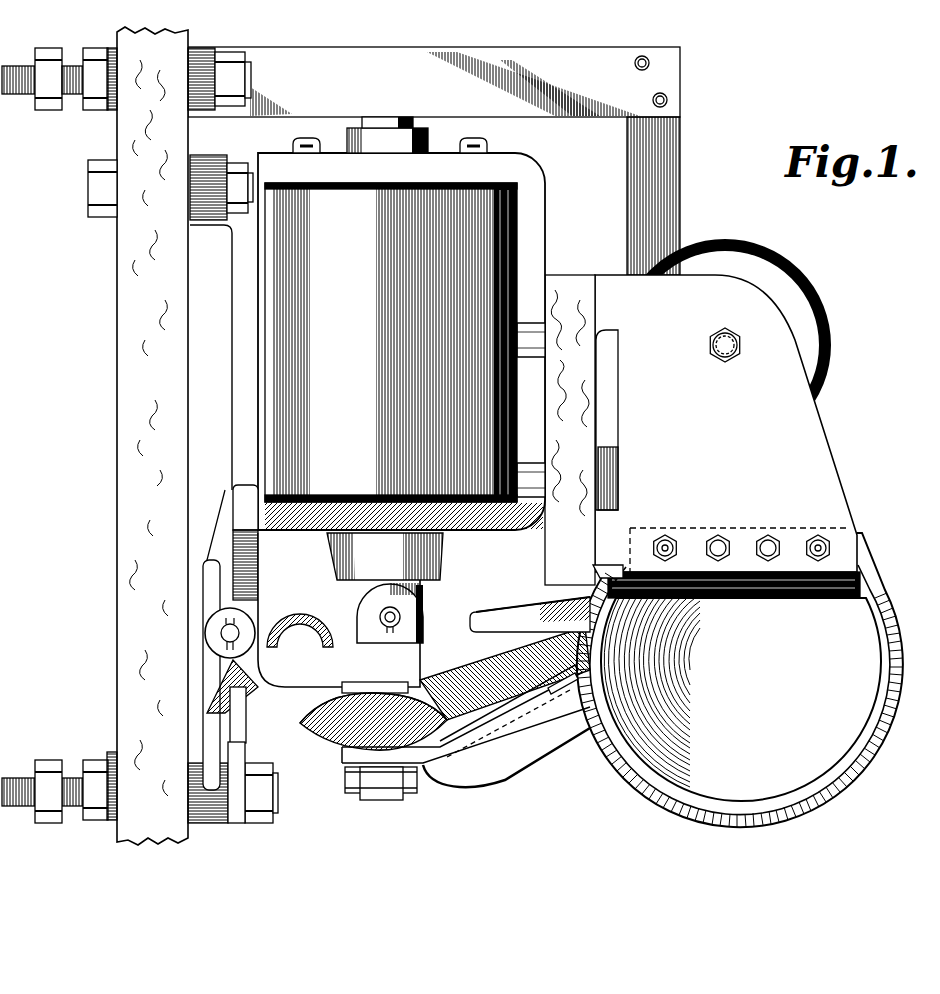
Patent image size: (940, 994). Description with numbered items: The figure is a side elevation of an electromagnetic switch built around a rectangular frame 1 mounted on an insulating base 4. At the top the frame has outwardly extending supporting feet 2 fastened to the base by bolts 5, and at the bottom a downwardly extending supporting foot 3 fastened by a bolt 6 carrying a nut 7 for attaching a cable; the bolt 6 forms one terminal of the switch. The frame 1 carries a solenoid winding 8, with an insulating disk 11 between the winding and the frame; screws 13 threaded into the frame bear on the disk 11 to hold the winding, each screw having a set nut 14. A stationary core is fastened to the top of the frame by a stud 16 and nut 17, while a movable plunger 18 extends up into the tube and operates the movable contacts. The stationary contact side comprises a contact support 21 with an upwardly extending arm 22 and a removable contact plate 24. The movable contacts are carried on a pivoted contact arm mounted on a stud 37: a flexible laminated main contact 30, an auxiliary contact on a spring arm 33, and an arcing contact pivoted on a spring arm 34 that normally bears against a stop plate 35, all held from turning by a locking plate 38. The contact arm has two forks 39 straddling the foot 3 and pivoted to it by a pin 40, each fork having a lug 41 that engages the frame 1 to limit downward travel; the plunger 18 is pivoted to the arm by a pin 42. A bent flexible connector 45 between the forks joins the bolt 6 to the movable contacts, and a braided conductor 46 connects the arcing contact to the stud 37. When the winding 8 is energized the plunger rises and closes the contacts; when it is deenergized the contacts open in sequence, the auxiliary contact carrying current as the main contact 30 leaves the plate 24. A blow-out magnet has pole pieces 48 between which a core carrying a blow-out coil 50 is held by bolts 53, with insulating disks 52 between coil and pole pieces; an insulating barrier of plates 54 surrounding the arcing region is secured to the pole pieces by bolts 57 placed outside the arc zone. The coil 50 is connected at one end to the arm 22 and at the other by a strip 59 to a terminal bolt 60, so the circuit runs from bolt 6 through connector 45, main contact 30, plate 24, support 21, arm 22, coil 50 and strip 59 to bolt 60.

The frame 1 is at (401, 341).
The supporting feet 2 is at (211, 357).
The supporting foot 3 is at (248, 590).
The insulating base 4 is at (152, 436).
The bolts 5 is at (170, 187).
The bolt 6 is at (20, 784).
The nut 7 is at (338, 607).
The winding 8 is at (391, 342).
The insulating disk 11 is at (326, 182).
The screws 13 is at (385, 136).
The set nut 14 is at (318, 146).
The stud 16 is at (406, 118).
The nut 17 is at (387, 141).
The movable plunger 18 is at (420, 600).
The contact support 21 is at (515, 610).
The arm 22 is at (608, 483).
The contact plate 24 is at (476, 626).
The main contact 30 is at (460, 670).
The spring arm 33 is at (552, 670).
The spring arm 34 is at (502, 740).
The plate 35 is at (512, 715).
The stud 37 is at (362, 796).
The locking plate 38 is at (352, 682).
The forks 39 is at (339, 610).
The pin 40 is at (242, 630).
The lug 41 is at (205, 583).
The pin 42 is at (384, 618).
The flexible connector 45 is at (300, 616).
The braided conductor 46 is at (483, 783).
The pole pieces 48 is at (727, 436).
The blow-out coil 50 is at (682, 220).
The insulating disks 52 is at (810, 300).
The bolts 53 is at (708, 342).
The insulating plates 54 is at (888, 605).
The bolts 57 is at (666, 545).
The strip 59 is at (575, 65).
The bolt 60 is at (250, 82).